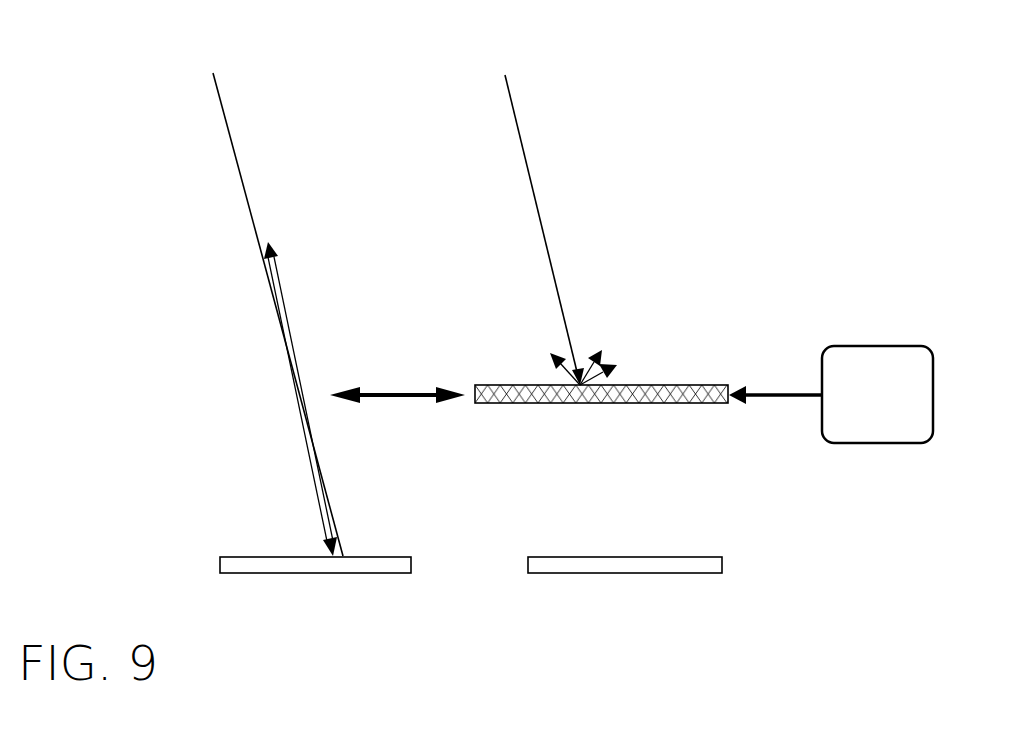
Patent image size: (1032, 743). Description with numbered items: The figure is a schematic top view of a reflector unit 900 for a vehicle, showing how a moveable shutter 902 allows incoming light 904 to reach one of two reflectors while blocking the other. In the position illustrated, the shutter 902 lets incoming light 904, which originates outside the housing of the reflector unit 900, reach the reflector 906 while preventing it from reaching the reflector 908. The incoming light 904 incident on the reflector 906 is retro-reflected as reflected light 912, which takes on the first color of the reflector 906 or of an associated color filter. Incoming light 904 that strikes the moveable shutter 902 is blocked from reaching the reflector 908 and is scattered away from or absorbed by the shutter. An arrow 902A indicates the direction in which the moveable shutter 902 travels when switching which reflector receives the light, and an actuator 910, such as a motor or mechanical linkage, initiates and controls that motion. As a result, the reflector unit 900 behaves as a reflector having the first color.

The reflector unit 900 is at (106, 74).
The moveable shutter 902 is at (645, 385).
The arrow 902A is at (408, 388).
The incoming light 904 is at (268, 303).
The reflector 906 is at (298, 573).
The reflector 908 is at (641, 573).
The actuator 910 is at (862, 420).
The reflected light 912 is at (292, 340).